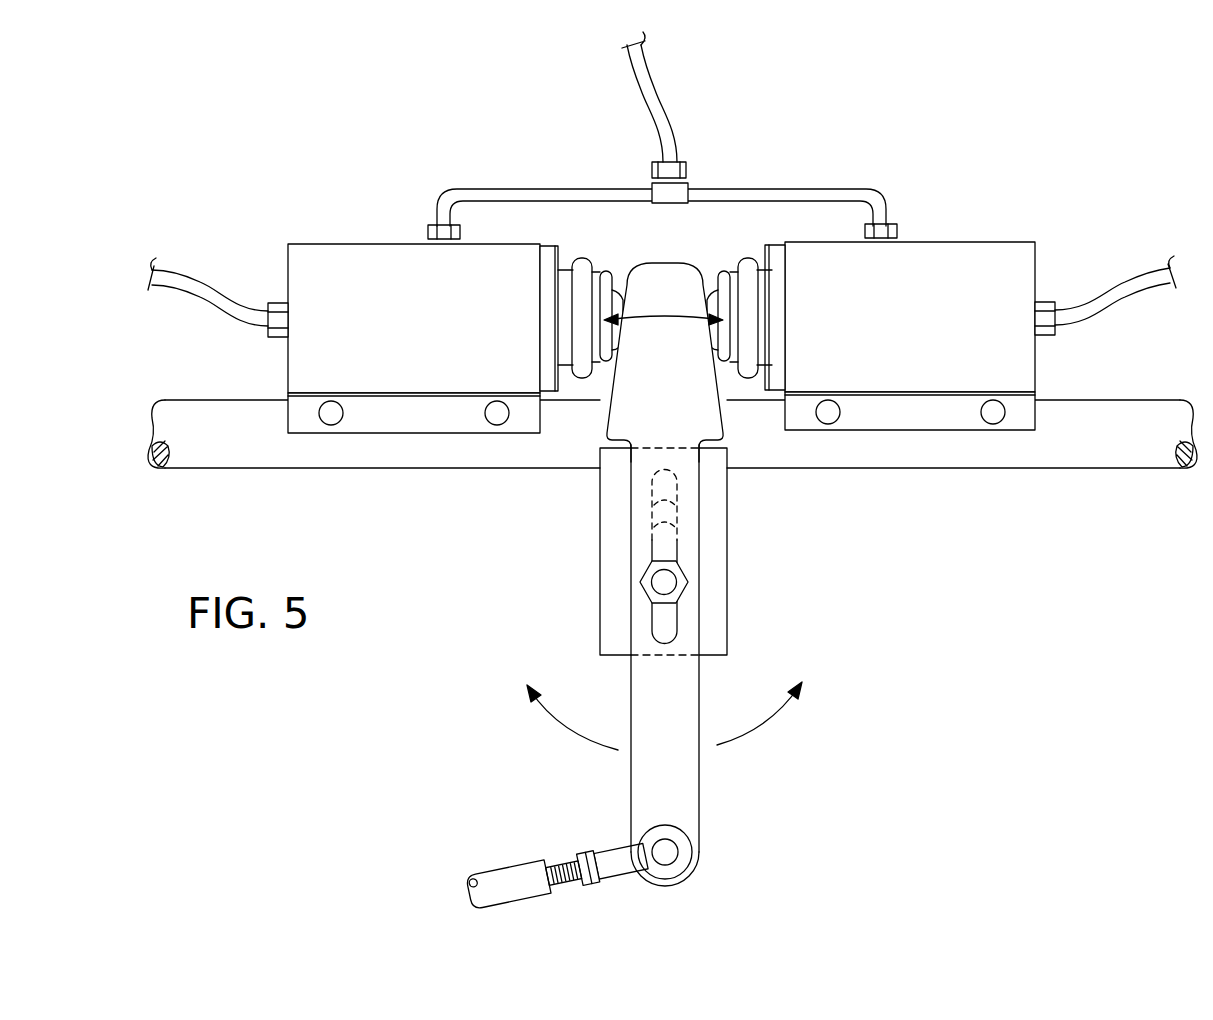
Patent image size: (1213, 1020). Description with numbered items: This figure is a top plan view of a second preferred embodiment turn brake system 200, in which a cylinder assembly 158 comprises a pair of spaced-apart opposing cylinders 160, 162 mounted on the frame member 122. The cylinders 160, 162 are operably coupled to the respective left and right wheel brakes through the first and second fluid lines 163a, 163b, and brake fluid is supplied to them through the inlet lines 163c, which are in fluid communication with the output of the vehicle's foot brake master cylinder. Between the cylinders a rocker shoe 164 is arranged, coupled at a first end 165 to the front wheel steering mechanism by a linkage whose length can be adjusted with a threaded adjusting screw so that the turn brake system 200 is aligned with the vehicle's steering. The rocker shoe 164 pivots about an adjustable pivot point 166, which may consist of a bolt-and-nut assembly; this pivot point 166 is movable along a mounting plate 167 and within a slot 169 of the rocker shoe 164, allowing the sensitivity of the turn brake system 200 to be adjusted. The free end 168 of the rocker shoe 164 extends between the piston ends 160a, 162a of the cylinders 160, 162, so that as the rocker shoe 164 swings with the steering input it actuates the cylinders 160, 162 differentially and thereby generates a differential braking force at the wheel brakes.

The frame rail 122 is at (228, 468).
The cylinder assembly 158 is at (583, 160).
The cylinder 160 is at (362, 250).
The piston end 160a is at (613, 277).
The cylinder 162 is at (935, 250).
The piston end 162a is at (709, 277).
The first fluid line 163a is at (205, 296).
The second fluid line 163b is at (1127, 287).
The inlet lines 163c is at (620, 187).
The rocker shoe 164 is at (678, 695).
The first end 165 is at (688, 790).
The adjustable pivot point 166 is at (660, 503).
The mounting plate 167 is at (608, 542).
The free end 168 is at (677, 290).
The slot 169 is at (665, 537).
The turn brake system 200 is at (891, 110).